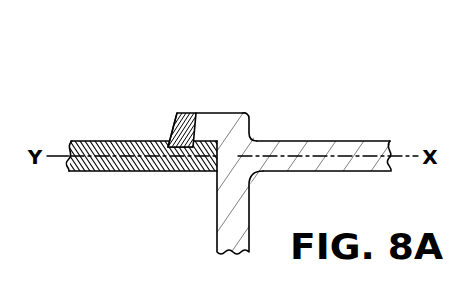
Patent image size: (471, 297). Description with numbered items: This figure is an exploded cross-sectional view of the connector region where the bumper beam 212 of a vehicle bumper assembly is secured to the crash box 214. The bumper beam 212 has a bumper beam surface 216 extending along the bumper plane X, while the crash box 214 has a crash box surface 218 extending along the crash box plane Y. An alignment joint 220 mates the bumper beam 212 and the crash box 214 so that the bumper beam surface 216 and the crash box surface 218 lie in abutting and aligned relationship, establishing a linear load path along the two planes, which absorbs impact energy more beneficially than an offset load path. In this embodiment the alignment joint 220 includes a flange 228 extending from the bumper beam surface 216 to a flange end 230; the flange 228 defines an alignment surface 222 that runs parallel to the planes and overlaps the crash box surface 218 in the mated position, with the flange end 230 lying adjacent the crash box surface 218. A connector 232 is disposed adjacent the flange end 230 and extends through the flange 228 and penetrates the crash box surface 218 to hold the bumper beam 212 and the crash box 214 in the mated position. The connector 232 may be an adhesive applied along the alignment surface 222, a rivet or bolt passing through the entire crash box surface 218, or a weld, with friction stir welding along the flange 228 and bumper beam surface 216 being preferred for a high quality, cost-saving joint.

The bumper beam 212 is at (391, 152).
The crash box 214 is at (70, 147).
The bumper beam surface 216 is at (336, 141).
The crash box surface 218 is at (108, 141).
The alignment joint 220 is at (242, 110).
The alignment surface 222 is at (193, 173).
The flange 228 is at (227, 112).
The flange end 230 is at (168, 141).
The connector 232 is at (182, 113).